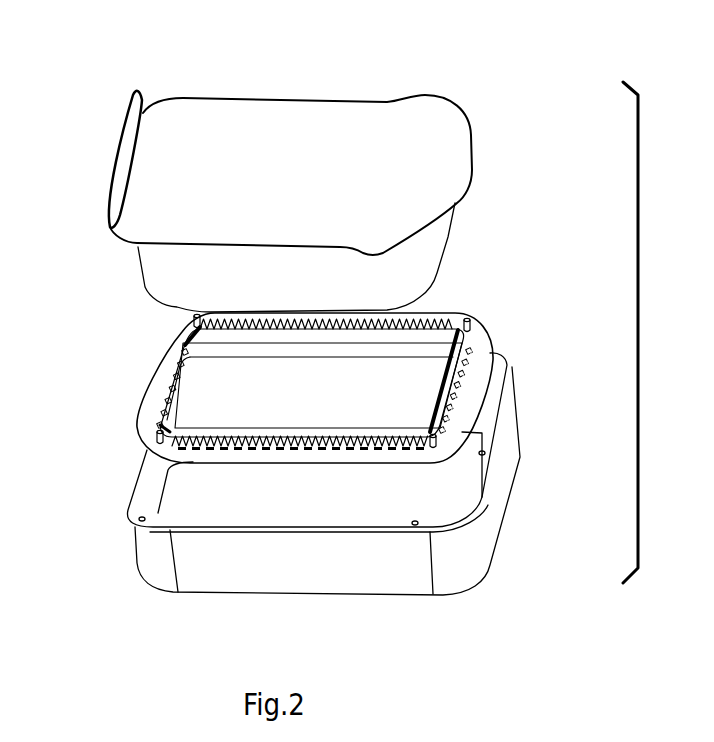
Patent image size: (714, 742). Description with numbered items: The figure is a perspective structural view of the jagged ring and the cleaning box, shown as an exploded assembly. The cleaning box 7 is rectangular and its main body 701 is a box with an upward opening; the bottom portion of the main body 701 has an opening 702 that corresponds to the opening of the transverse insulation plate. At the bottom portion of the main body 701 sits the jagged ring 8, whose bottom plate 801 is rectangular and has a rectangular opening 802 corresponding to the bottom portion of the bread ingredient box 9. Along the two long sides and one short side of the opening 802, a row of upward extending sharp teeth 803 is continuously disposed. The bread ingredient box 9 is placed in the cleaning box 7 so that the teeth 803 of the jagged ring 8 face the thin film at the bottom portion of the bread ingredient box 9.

The cleaning box 7 is at (118, 585).
The main body 701 is at (172, 548).
The opening 702 is at (228, 495).
The jagged ring 8 is at (112, 403).
The bottom plate 801 is at (473, 352).
The rectangular opening 802 is at (430, 393).
The sharp teeth 803 is at (443, 327).
The bread ingredient box 9 is at (183, 220).